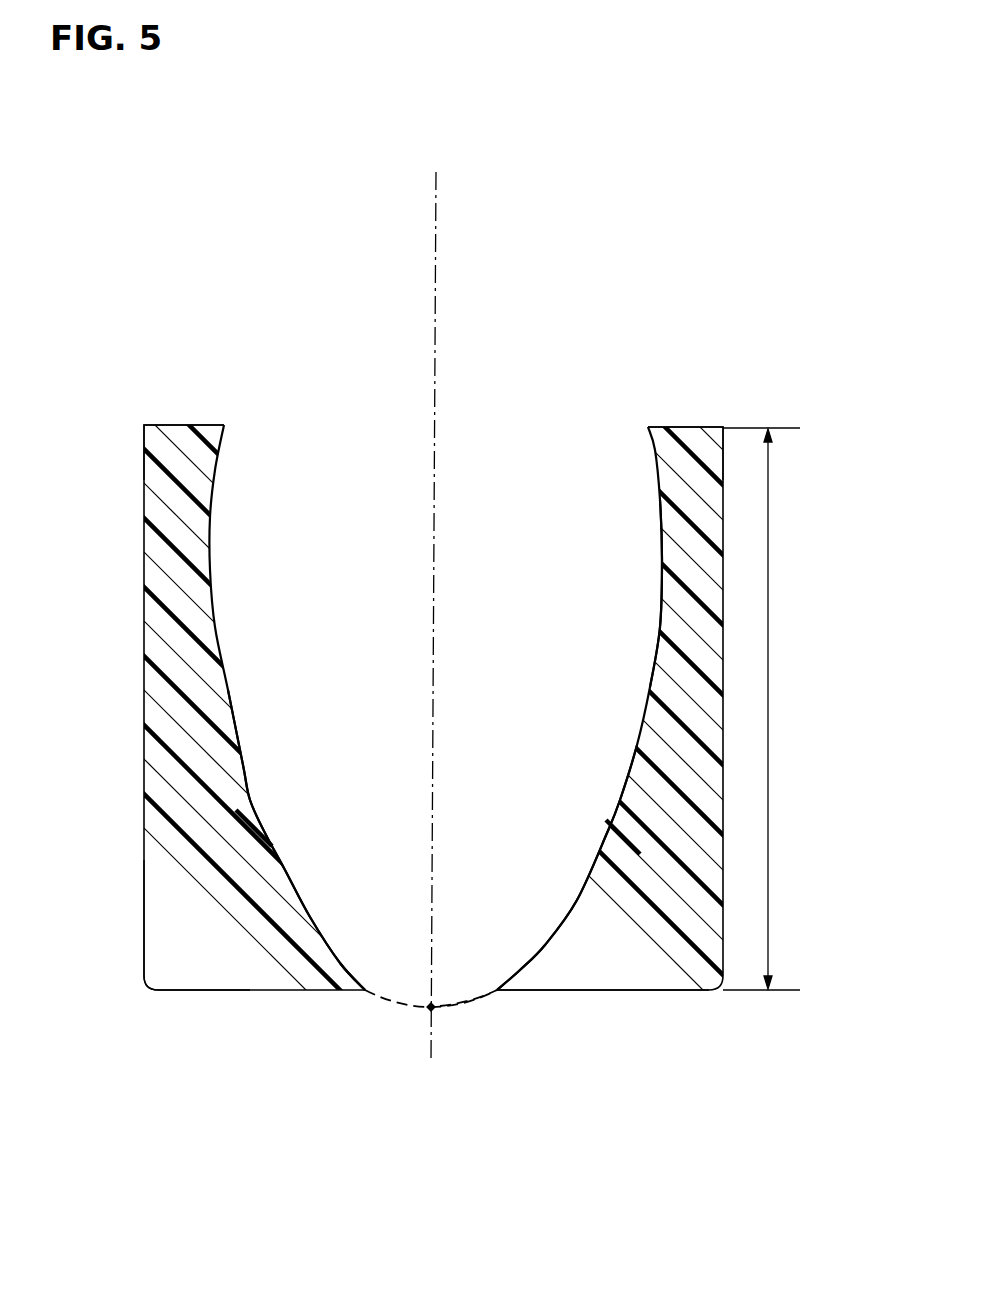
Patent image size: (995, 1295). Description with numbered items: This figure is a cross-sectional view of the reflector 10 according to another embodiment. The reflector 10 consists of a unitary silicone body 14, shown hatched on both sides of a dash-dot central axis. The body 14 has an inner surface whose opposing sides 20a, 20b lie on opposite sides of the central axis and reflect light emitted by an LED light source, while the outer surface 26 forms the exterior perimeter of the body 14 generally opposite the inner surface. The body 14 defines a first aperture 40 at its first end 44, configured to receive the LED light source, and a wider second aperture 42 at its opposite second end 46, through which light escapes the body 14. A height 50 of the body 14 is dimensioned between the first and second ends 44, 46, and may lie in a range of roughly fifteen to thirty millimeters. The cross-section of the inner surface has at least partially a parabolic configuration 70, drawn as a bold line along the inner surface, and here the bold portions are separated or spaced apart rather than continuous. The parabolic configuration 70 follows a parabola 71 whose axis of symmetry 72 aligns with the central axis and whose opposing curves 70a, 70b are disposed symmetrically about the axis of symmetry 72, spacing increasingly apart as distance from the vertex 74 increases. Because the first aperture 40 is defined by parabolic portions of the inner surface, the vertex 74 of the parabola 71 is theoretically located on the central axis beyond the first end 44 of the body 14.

The reflector 10 is at (497, 632).
The unitary silicone body 14 is at (674, 793).
The opposing side of the inner surface 20a is at (262, 840).
The opposing side of the inner surface 20b is at (614, 828).
The outer surface 26 is at (144, 917).
The first aperture 40 is at (405, 987).
The second aperture 42 is at (258, 427).
The first end 44 is at (497, 992).
The second end 46 is at (648, 427).
The height 50 is at (768, 730).
The parabolic configuration 70 is at (651, 588).
The curve of the parabola 70a is at (624, 757).
The curve of the parabola 70b is at (241, 765).
The parabola 71 is at (462, 1005).
The axis of symmetry 72 is at (434, 473).
The vertex 74 is at (431, 1007).